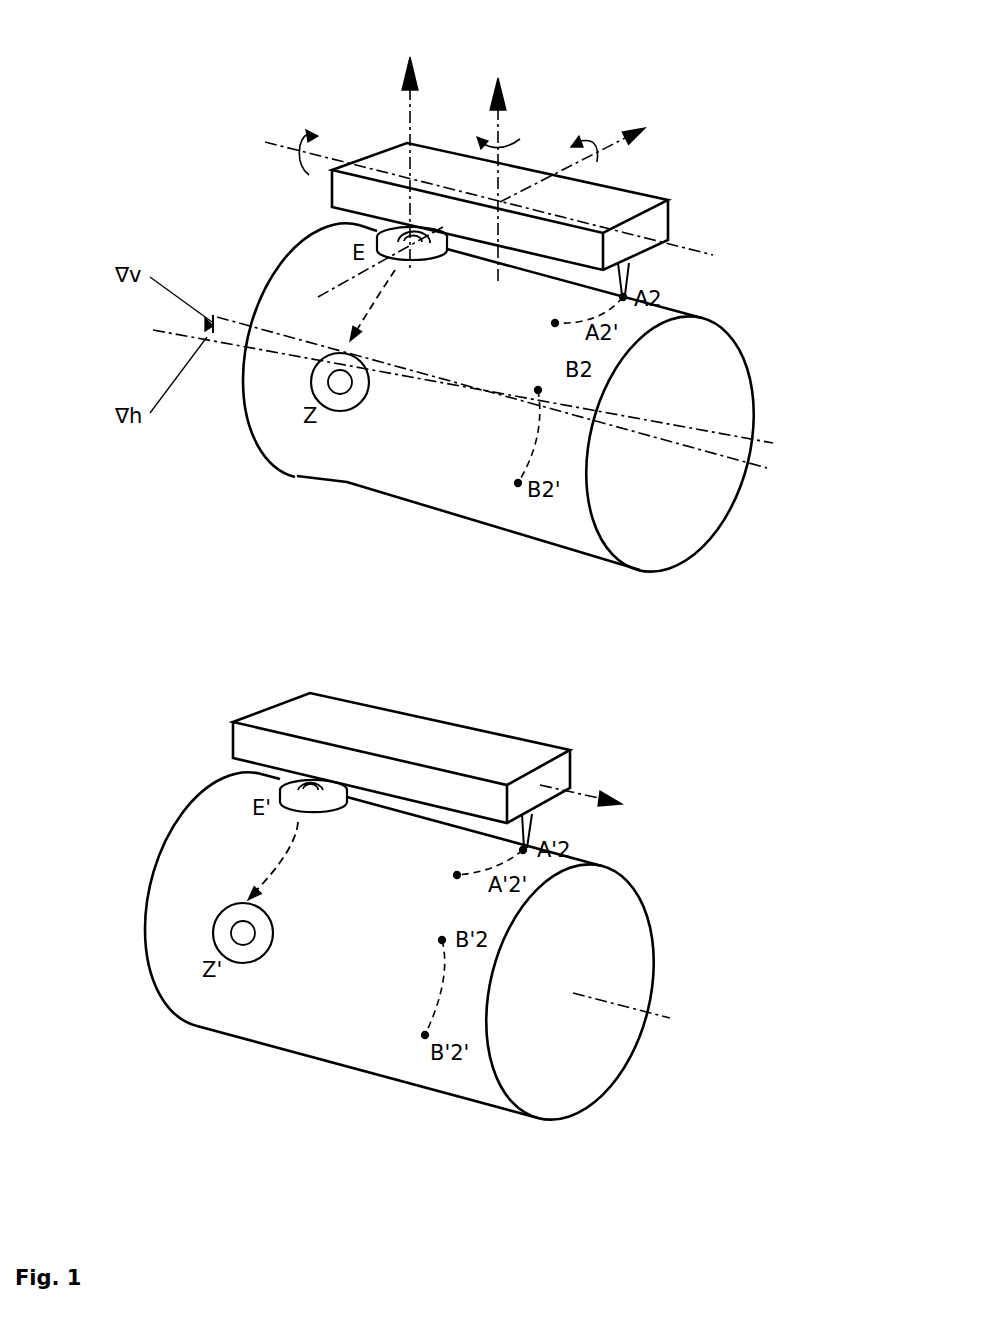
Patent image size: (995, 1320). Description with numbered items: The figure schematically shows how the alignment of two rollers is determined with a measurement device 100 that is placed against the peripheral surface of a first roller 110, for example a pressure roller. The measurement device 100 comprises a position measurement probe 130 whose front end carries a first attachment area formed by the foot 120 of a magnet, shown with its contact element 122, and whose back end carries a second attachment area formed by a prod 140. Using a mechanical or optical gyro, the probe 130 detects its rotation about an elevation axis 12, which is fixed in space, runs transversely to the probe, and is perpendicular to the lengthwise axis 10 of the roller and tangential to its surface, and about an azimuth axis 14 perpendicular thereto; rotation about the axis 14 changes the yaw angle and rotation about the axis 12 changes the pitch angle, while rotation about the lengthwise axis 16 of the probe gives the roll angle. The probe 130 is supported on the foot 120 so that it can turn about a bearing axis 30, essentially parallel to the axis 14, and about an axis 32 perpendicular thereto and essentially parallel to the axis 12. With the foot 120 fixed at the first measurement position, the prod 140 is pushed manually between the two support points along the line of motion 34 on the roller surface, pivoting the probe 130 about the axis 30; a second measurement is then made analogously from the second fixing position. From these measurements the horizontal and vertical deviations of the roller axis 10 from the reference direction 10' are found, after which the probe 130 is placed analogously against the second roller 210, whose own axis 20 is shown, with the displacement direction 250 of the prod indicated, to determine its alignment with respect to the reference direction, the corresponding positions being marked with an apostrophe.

The first roller 110 is at (317, 228).
The lengthwise axis of the probe 16 is at (283, 147).
The position measurement probe 130 is at (377, 153).
The bearing axis 30 is at (407, 123).
The azimuth axis 14 is at (503, 133).
The measurement device 100 is at (547, 127).
The elevation axis 12 is at (605, 140).
The axis perpendicular to the bearing axis 32 is at (347, 280).
The sensor tip 122 is at (413, 230).
The foot of the magnet 120 is at (418, 258).
The prod 140 is at (632, 277).
The line of motion of the prod 34 is at (640, 305).
The reference direction 10' is at (516, 386).
The lengthwise axis of the roller 10 is at (547, 446).
The second roller 210 is at (192, 823).
The displacement direction 250 is at (601, 795).
The axis of the second object 20 is at (627, 1003).